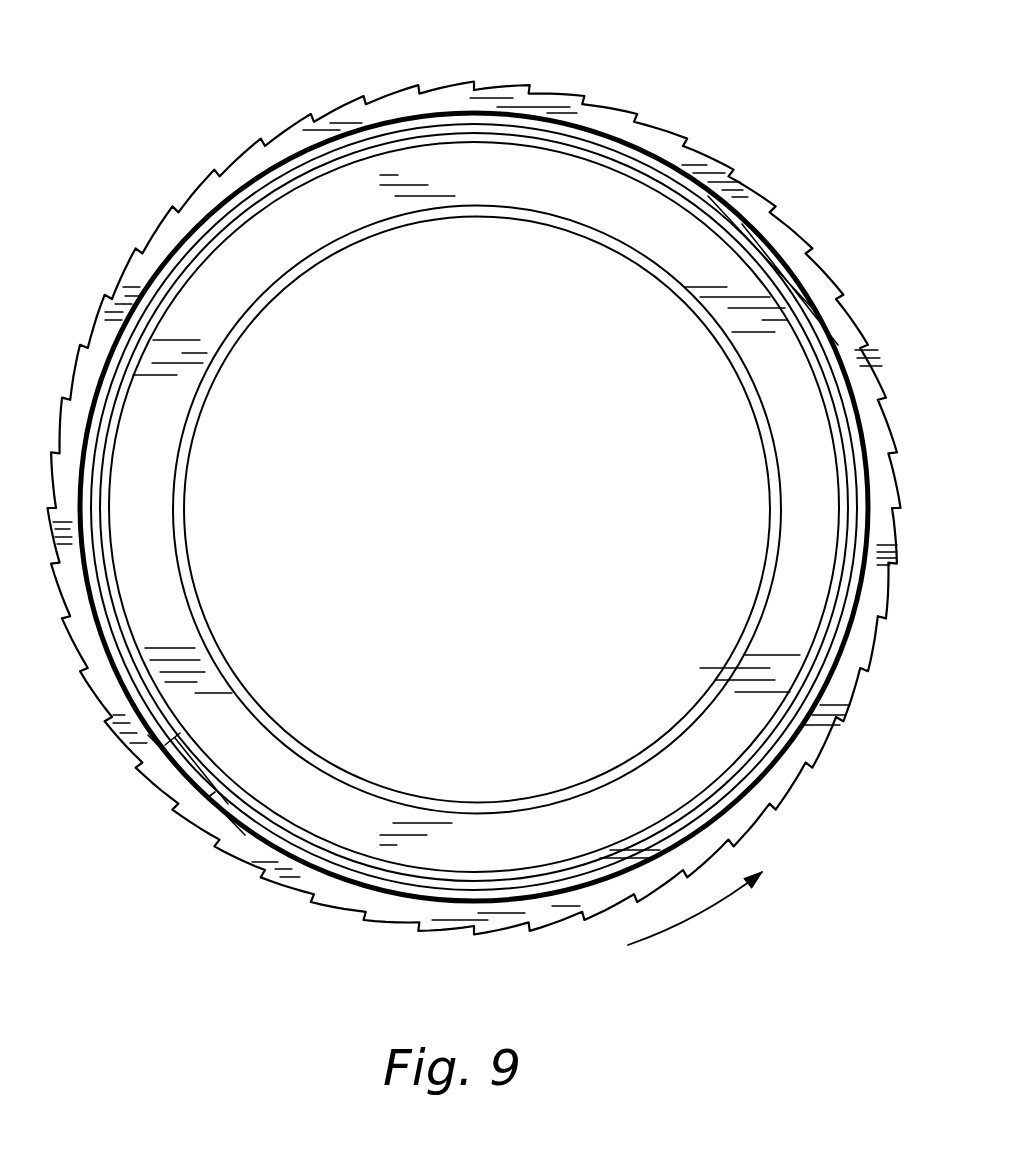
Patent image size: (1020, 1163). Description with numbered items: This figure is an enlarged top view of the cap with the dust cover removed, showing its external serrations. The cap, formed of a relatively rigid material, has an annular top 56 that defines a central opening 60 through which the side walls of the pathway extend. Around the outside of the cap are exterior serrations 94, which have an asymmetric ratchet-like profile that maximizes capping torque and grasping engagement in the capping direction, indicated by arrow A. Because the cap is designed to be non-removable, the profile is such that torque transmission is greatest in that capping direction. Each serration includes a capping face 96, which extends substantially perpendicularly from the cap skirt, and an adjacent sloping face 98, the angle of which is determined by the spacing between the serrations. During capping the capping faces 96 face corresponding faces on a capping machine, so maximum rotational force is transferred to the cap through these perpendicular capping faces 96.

The sloping face 98 is at (505, 91).
The capping face 96 is at (540, 95).
The exterior serrations 94 is at (858, 324).
The annular top 56 is at (795, 561).
The central opening 60 is at (465, 513).
The arrow indicating capping direction A is at (707, 912).